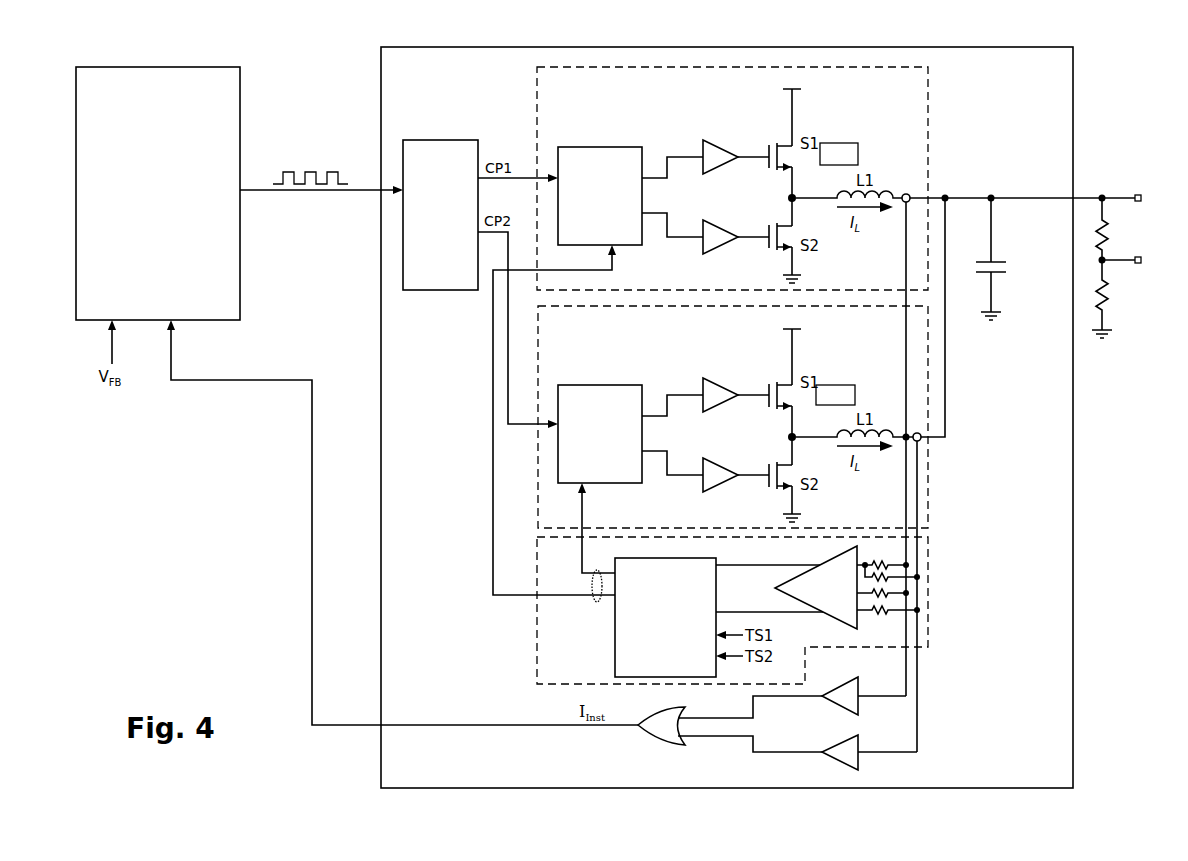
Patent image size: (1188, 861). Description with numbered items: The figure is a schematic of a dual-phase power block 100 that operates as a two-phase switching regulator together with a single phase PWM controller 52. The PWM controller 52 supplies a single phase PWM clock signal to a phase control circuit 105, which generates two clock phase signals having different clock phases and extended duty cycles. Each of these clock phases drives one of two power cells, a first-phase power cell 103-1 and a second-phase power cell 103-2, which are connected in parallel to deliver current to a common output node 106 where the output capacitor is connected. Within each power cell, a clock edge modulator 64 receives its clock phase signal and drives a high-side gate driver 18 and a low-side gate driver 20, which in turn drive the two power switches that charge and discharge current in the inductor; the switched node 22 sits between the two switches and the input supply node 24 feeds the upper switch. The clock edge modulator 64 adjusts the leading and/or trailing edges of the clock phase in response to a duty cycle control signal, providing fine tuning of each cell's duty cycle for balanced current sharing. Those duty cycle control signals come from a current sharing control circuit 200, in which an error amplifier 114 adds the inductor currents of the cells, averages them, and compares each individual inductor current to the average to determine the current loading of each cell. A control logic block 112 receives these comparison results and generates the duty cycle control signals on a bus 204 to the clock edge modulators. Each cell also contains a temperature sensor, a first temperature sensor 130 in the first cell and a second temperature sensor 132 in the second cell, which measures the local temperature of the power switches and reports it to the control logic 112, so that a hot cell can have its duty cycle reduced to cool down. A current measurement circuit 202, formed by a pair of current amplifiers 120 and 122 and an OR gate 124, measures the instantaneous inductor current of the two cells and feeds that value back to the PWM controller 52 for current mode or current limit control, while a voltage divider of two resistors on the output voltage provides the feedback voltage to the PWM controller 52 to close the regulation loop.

The dual-phase power block 100 is at (616, 47).
The single phase PWM controller 52 is at (204, 259).
The phase control circuit 105 is at (433, 290).
The clock edge modulator 64 is at (625, 245).
The gate driver 18 is at (720, 146).
The gate driver 20 is at (719, 228).
The input voltage node 24 is at (797, 91).
The switching node 22 is at (796, 202).
The temperature sensor TS1 130 is at (841, 144).
The temperature sensor TS2 132 is at (838, 386).
The phase 1 power cell 103-1 is at (928, 85).
The phase 2 power cell 103-2 is at (928, 504).
The common output node 106 is at (991, 194).
The current sharing control circuit 200 is at (928, 562).
The bus 204 is at (597, 603).
The control logic block 112 is at (651, 671).
The error amplifier 114 is at (836, 620).
The current amplifier 120 is at (840, 705).
The current amplifier 122 is at (840, 760).
The OR gate 124 is at (665, 745).
The current measurement circuit 202 is at (938, 723).